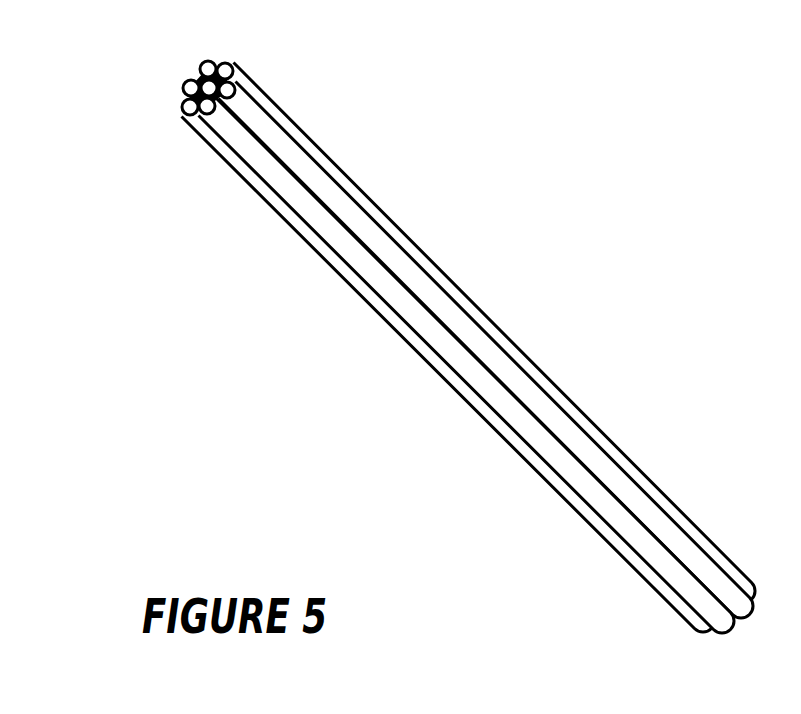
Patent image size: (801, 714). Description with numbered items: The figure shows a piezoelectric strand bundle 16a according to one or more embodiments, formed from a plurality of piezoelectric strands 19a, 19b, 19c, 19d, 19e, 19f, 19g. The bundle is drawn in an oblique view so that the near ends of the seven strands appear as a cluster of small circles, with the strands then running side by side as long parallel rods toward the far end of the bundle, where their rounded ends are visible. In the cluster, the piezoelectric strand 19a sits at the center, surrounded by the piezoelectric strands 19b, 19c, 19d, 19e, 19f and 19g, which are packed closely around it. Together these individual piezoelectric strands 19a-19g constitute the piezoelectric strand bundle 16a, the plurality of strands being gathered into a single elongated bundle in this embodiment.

The piezoelectric strand bundle 16a is at (515, 313).
The piezoelectric strand 19a is at (203, 86).
The piezoelectric strand 19b is at (206, 62).
The piezoelectric strand 19c is at (187, 80).
The piezoelectric strand 19d is at (184, 103).
The piezoelectric strand 19e is at (202, 112).
The piezoelectric strand 19f is at (232, 84).
The piezoelectric strand 19g is at (223, 63).